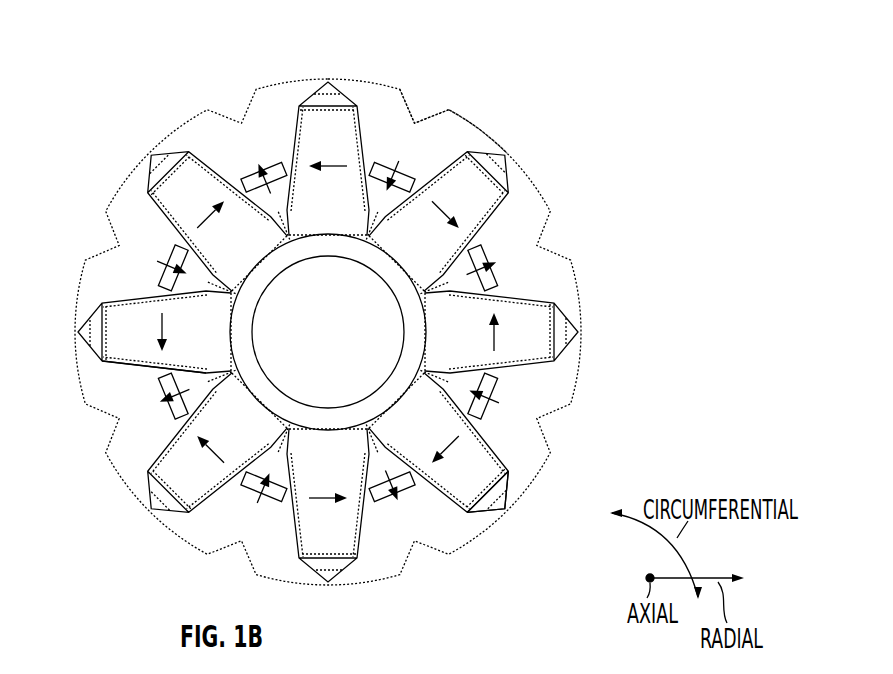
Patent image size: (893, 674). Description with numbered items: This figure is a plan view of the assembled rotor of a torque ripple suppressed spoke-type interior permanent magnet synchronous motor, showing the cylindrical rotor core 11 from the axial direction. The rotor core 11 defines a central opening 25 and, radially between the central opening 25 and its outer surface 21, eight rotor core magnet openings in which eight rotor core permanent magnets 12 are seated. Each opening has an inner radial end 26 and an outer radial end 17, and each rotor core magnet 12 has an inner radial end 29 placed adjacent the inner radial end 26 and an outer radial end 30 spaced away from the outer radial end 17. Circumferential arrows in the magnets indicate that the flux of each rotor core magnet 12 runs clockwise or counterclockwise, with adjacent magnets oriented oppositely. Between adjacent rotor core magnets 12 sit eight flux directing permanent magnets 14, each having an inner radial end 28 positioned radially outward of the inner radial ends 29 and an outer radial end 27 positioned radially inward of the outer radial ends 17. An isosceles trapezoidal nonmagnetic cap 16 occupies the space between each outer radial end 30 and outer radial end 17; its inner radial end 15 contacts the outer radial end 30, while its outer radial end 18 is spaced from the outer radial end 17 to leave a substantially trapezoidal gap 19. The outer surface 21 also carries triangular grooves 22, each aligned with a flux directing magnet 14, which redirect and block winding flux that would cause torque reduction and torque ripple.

The cylindrical rotor core 11 is at (96, 276).
The rotor core permanent magnet 12 is at (452, 505).
The flux directing permanent magnet 14 is at (455, 122).
The inner radial end of cap 15 is at (470, 508).
The nonmagnetic cap 16 is at (146, 492).
The outer radial end of rotor core magnet opening 17 is at (329, 78).
The outer radial end of cap 18 is at (506, 508).
The gap 19 is at (581, 332).
The outer surface 21 is at (478, 128).
The groove 22 is at (233, 97).
The central opening 25 is at (297, 399).
The inner radial end of rotor core magnet opening 26 is at (236, 352).
The outer radial end of flux directing magnet 27 is at (486, 250).
The inner radial end of flux directing magnet 28 is at (497, 279).
The inner radial end of rotor core magnet 29 is at (126, 368).
The outer radial end of rotor core magnet 30 is at (77, 332).